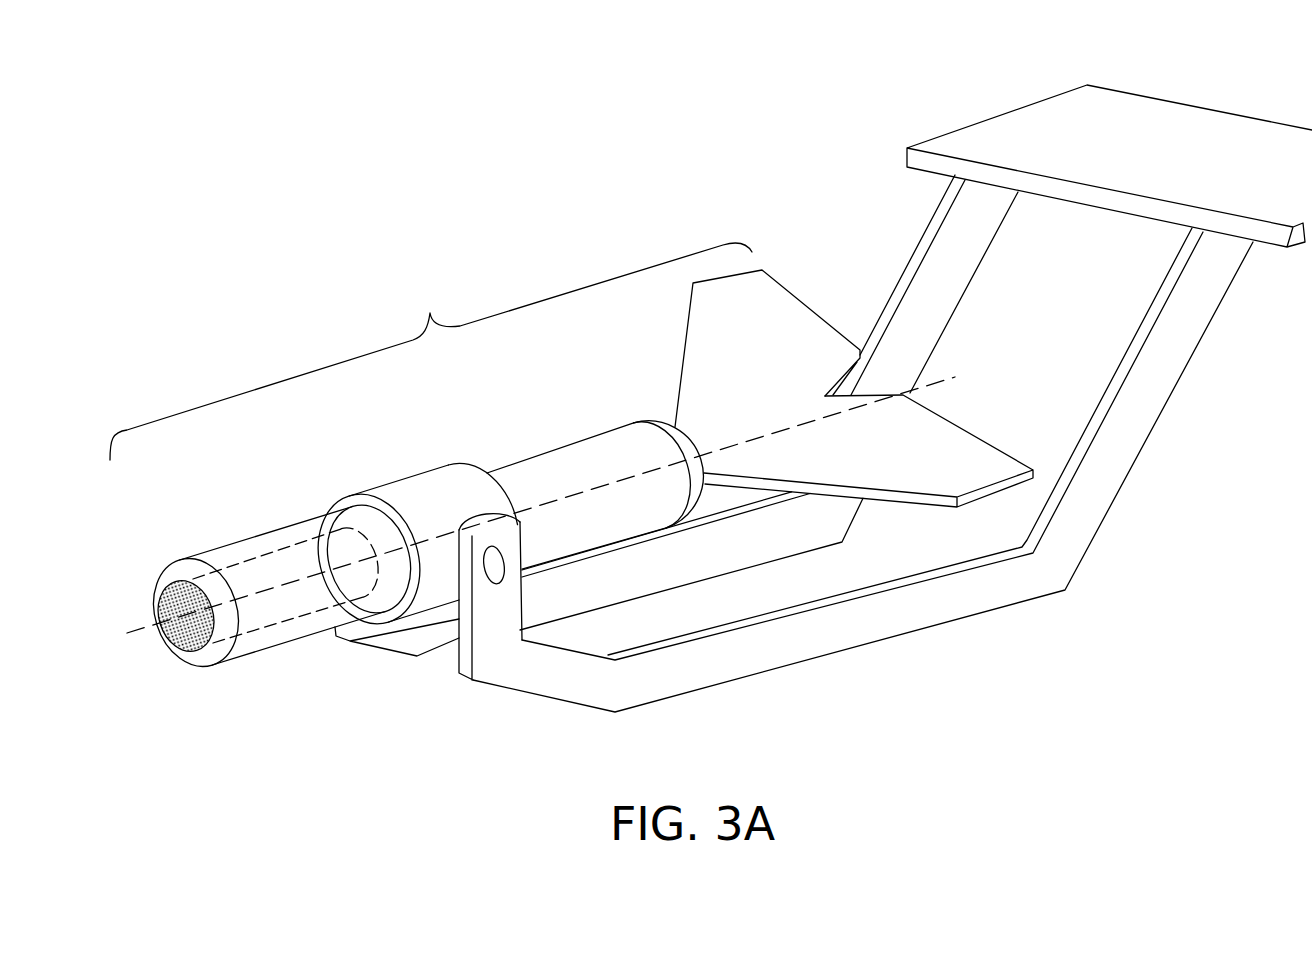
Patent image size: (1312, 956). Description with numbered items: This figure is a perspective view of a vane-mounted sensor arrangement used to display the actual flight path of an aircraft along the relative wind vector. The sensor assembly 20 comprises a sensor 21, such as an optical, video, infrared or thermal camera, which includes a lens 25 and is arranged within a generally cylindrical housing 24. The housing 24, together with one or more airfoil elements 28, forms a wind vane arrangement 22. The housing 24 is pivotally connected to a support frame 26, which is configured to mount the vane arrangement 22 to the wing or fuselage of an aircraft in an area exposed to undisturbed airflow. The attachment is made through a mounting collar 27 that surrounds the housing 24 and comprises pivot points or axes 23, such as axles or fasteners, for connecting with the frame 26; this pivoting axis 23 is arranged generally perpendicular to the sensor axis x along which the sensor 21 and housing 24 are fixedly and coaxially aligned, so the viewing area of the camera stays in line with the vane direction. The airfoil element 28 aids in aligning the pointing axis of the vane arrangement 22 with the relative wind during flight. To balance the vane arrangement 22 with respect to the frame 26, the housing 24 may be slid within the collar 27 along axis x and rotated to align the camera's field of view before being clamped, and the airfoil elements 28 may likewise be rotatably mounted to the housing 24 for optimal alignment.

The sensor assembly 20 is at (568, 246).
The sensor 21 is at (288, 628).
The wind vane arrangement 22 is at (571, 451).
The pivot points or axes 23 is at (501, 556).
The housing 24 is at (293, 537).
The lens 25 is at (160, 598).
The support frame 26 is at (853, 626).
The mounting collar 27 is at (430, 480).
The airfoil element 28 is at (760, 297).